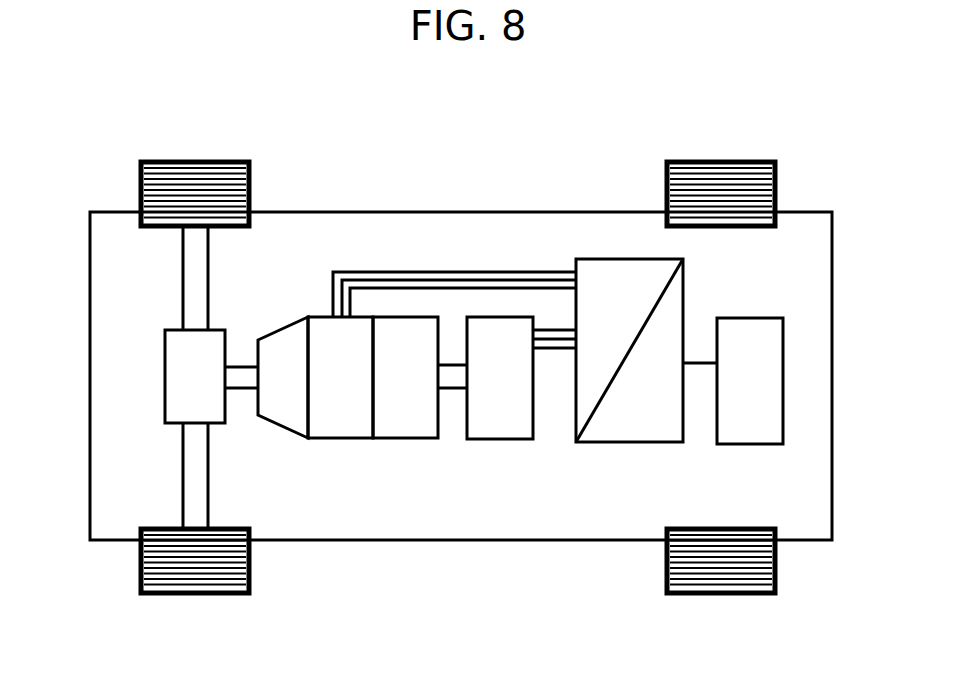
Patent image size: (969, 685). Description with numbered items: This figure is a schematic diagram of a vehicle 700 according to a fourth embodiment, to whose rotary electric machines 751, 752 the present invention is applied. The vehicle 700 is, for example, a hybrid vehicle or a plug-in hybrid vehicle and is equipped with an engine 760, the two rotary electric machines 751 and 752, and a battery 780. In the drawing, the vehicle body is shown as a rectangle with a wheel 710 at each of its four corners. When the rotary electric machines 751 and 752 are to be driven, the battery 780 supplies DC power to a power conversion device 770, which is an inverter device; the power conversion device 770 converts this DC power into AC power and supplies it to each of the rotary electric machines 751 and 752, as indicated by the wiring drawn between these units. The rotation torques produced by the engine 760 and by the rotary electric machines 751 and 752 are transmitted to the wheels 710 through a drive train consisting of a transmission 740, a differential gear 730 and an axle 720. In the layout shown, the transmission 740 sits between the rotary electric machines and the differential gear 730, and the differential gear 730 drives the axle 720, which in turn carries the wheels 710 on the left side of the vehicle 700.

The vehicle 700 is at (812, 170).
The wheels 710 is at (218, 170).
The axle 720 is at (193, 478).
The differential gear 730 is at (177, 383).
The transmission 740 is at (288, 410).
The rotary electric machine 751 is at (345, 423).
The rotary electric machine 752 is at (502, 427).
The engine 760 is at (403, 330).
The power conversion device 770 is at (613, 432).
The battery 780 is at (767, 394).